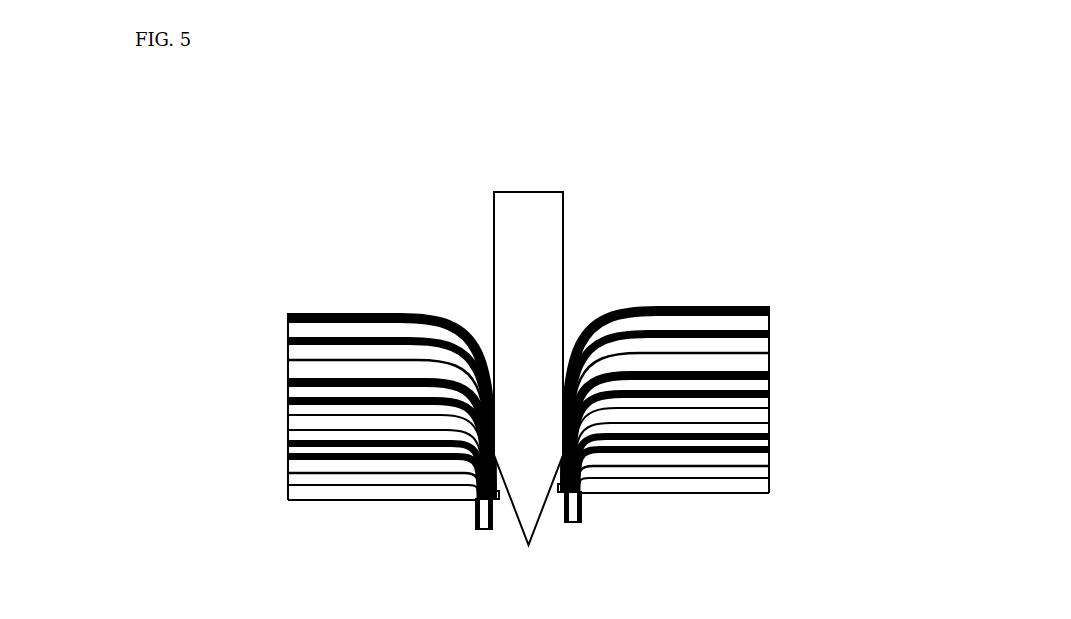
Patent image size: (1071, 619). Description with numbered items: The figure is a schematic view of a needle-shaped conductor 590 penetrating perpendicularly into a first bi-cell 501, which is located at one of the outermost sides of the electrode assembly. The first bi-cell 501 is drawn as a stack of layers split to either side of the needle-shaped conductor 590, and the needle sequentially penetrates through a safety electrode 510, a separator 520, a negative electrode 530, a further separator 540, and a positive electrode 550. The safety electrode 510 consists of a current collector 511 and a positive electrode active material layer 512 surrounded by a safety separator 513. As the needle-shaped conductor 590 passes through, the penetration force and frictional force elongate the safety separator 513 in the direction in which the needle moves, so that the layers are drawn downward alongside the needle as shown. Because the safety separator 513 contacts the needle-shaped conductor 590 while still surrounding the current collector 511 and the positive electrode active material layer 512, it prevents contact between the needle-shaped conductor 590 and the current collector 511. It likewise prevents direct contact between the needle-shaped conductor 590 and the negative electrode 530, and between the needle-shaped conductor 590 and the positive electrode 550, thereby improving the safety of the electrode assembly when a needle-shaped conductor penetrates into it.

The first bi-cell 501 is at (385, 272).
The safety electrode 510 is at (192, 272).
The current collector 511 is at (288, 359).
The positive electrode active material layer 512 is at (288, 384).
The safety separator 513 is at (288, 319).
The separator 520 is at (288, 404).
The negative electrode 530 is at (280, 412).
The separator 540 is at (770, 440).
The positive electrode 550 is at (280, 457).
The needle-shaped conductor 590 is at (532, 192).